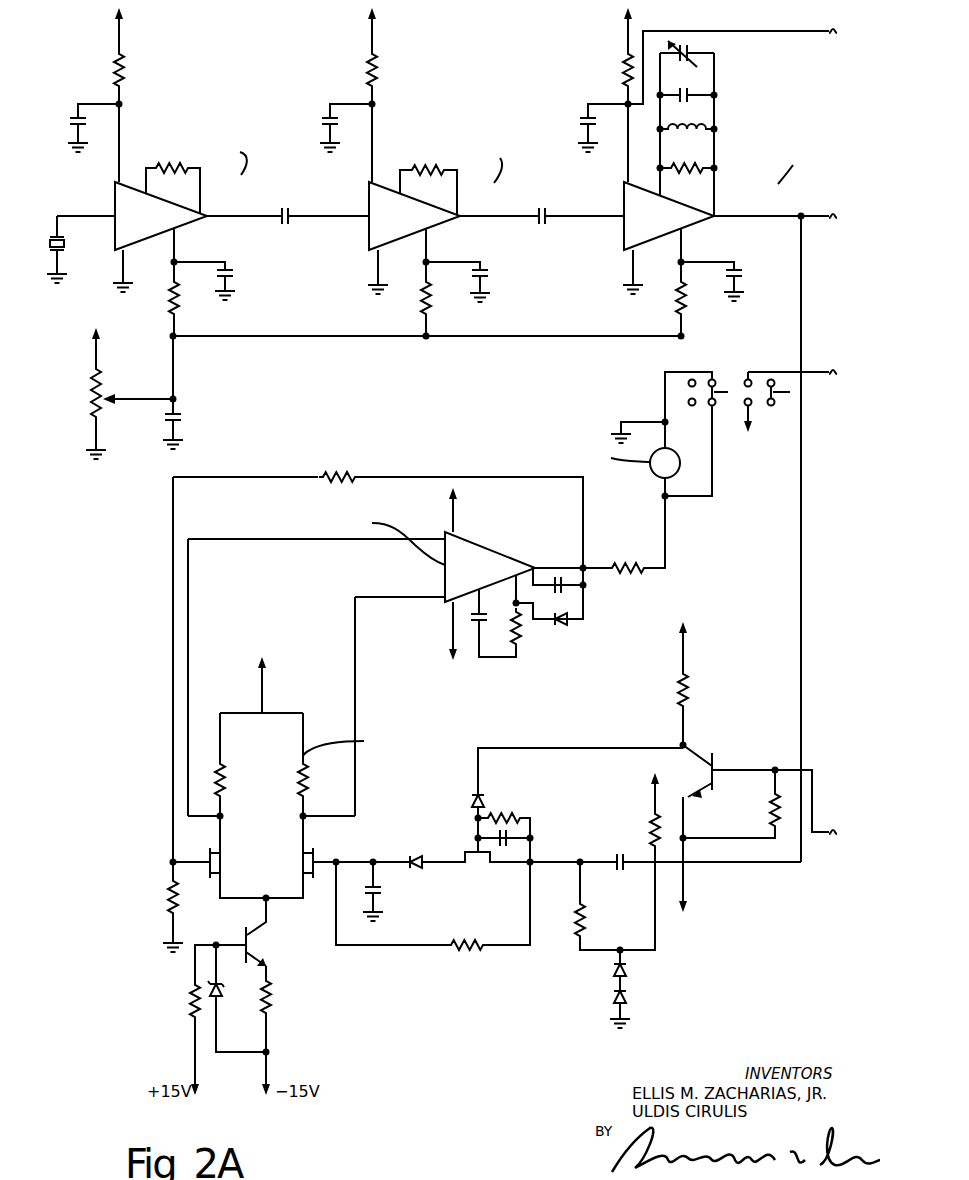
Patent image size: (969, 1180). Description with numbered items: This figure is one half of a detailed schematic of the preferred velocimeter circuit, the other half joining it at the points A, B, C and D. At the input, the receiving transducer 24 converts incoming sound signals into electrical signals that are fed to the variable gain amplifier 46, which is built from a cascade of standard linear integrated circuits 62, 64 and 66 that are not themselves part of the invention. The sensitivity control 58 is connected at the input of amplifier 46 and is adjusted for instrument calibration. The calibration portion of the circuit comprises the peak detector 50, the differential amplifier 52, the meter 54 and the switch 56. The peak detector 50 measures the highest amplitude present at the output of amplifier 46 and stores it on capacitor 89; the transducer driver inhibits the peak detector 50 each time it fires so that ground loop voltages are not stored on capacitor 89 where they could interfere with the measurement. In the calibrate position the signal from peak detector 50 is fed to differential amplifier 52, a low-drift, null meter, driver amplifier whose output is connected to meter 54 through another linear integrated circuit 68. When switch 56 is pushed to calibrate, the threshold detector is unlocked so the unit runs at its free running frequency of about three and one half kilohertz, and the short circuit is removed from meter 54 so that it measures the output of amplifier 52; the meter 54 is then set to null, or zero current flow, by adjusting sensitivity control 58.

The receiving transducer 24 is at (66, 247).
The variable gain amplifier 46 is at (483, 92).
The peak detector 50 is at (566, 730).
The differential amplifier 52 is at (265, 807).
The meter 54 is at (652, 472).
The switch 56 is at (723, 366).
The sensitivity control 58 is at (91, 389).
The linear integrated circuit 62 is at (177, 203).
The linear integrated circuit 64 is at (430, 212).
The linear integrated circuit 66 is at (686, 211).
The linear integrated circuit 68 is at (492, 562).
The capacitor 89 is at (385, 888).